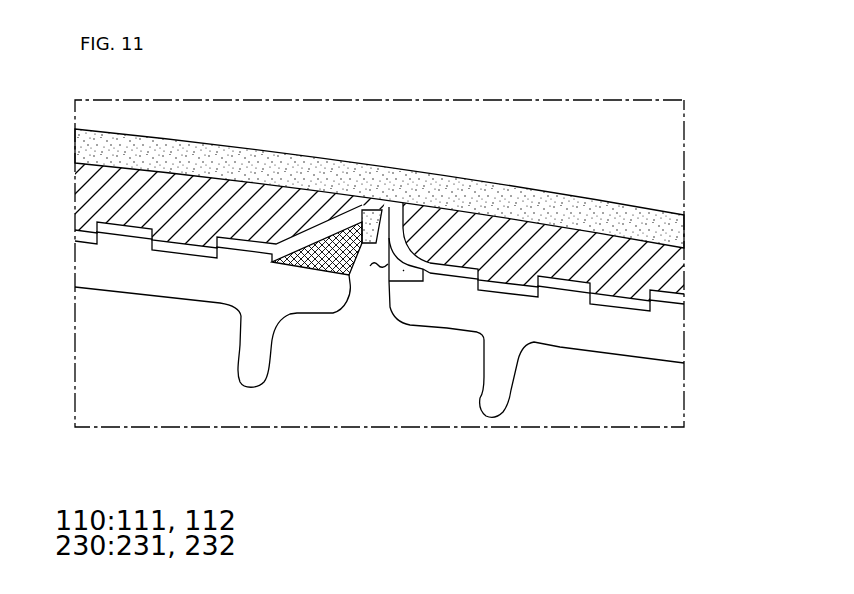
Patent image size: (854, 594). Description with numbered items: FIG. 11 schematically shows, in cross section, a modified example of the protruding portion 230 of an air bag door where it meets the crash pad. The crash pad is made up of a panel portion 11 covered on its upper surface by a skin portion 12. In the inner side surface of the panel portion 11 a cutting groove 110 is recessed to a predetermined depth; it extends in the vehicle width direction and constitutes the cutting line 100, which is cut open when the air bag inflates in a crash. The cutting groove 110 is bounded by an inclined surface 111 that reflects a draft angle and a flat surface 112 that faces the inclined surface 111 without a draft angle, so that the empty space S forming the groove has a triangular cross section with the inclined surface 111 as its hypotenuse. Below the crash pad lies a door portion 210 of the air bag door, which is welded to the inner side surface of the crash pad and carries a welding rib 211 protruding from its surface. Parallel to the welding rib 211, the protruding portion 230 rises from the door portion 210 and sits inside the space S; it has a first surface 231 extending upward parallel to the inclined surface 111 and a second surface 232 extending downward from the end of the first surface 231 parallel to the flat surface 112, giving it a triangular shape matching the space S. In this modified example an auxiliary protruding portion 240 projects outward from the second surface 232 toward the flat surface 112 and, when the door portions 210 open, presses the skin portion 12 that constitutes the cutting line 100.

The panel portion 11 is at (351, 182).
The skin portion 12 is at (178, 162).
The cutting line 100 is at (403, 270).
The cutting groove 110 is at (379, 182).
The inclined surface 111 is at (293, 250).
The flat surface 112 is at (422, 225).
The door portion 210 is at (103, 259).
The welding rib 211 is at (121, 230).
The protruding portion 230 is at (330, 277).
The first surface 231 is at (334, 250).
The second surface 232 is at (362, 246).
The auxiliary protruding portion 240 is at (370, 212).
The space S is at (377, 268).